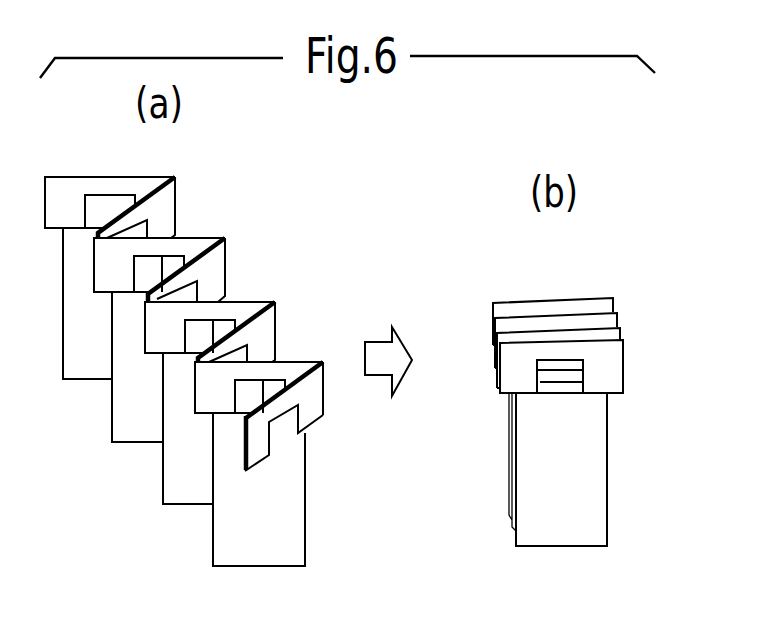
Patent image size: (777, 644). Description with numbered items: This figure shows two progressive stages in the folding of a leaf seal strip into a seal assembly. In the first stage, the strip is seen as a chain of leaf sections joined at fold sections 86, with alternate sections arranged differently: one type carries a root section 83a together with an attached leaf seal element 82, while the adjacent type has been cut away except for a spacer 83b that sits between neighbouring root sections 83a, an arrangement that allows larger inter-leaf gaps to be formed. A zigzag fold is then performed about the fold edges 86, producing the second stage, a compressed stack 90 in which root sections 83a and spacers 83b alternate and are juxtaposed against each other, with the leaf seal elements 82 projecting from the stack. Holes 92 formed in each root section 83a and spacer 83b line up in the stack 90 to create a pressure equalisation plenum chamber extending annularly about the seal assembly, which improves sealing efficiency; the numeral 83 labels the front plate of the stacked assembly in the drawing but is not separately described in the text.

The leaf seal element 82 is at (128, 425).
The fold section 86 is at (222, 252).
The root section 83a is at (308, 372).
The spacer 83b is at (317, 423).
The compressed stack 90 is at (632, 336).
The plate 83 is at (615, 366).
The hole 92 is at (553, 388).